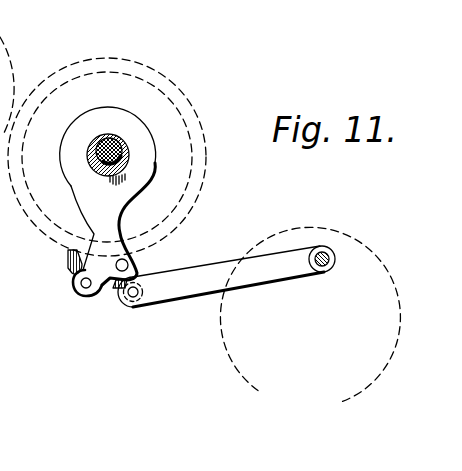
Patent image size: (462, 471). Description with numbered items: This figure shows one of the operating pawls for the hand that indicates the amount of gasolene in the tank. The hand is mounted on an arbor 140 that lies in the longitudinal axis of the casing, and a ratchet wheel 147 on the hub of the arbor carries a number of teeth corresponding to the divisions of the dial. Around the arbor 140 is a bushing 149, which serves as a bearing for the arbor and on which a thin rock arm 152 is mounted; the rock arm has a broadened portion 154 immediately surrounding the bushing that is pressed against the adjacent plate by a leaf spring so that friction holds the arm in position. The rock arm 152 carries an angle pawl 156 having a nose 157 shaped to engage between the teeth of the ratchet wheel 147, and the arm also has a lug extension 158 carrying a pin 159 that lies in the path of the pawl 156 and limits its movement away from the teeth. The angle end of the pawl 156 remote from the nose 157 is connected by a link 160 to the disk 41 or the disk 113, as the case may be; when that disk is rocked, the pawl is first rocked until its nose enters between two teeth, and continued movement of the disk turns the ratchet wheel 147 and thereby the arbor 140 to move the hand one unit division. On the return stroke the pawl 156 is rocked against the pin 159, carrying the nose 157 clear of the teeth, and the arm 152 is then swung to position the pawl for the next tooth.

The disk 41 is at (0, 36).
The disk 113 is at (395, 288).
The arbor 140 is at (117, 150).
The ratchet wheel 147 is at (187, 213).
The bushing 149 is at (127, 165).
The rock arm 152 is at (105, 222).
The broadened portion 154 is at (97, 118).
The pawl 156 is at (118, 290).
The nose 157 is at (68, 253).
The lug extension 158 is at (90, 297).
The pin 159 is at (80, 288).
The link 160 is at (247, 283).